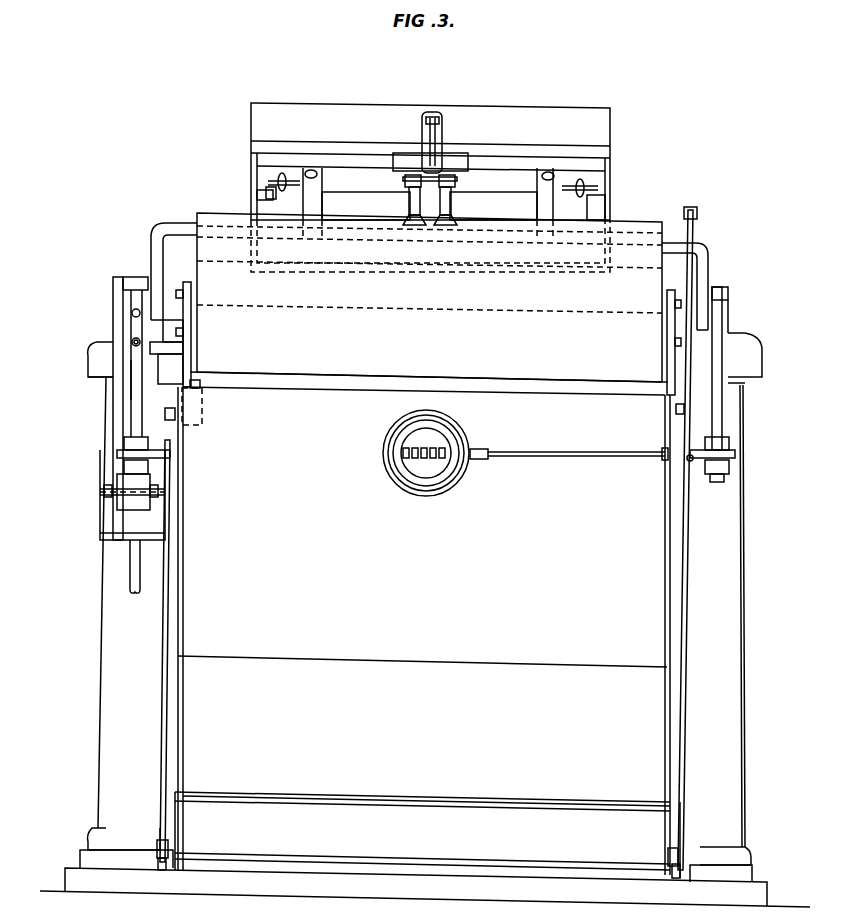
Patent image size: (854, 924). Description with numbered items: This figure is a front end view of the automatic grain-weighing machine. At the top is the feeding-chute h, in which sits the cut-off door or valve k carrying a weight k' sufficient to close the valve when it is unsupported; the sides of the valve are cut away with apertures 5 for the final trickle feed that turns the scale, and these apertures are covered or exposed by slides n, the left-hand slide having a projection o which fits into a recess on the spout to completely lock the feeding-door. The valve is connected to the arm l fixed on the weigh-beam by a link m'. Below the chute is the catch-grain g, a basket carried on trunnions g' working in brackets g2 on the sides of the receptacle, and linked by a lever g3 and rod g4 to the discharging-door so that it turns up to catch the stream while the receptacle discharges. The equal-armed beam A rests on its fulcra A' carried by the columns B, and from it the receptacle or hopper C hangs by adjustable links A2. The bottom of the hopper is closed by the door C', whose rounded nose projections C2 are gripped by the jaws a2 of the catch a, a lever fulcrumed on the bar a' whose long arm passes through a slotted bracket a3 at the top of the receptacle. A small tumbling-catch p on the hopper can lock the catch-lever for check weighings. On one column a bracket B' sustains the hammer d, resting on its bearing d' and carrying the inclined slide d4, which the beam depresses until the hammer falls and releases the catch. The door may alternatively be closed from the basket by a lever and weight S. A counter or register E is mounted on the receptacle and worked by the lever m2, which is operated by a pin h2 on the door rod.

The feeding-chute h is at (430, 187).
The cut-off door or valve k is at (428, 204).
The weight k' is at (429, 206).
The slides n is at (433, 194).
The apertures 5 is at (419, 205).
The projection o is at (266, 203).
The arm l is at (443, 133).
The link m' is at (415, 141).
The catch-grain g is at (429, 297).
The equal-armed beam A is at (433, 297).
The trunnions g' is at (428, 338).
The brackets g2 is at (192, 333).
The rod g4 is at (690, 222).
The lever g3 is at (698, 211).
The fulcra A' is at (430, 397).
The adjustable links A2 is at (130, 398).
The tumbling-catch p is at (170, 455).
The hammer d is at (423, 349).
The slide d4 is at (124, 380).
The bearing d' is at (121, 491).
The bracket B' is at (115, 521).
The columns B is at (416, 629).
The receptacle or hopper C is at (424, 631).
The door C' is at (425, 834).
The rounded nose projections C2 is at (170, 852).
The catch a is at (428, 651).
The bar a' is at (426, 787).
The jaws a2 is at (162, 870).
The bracket a3 is at (168, 420).
The lever and weight S is at (202, 402).
The counter or register E is at (458, 438).
The pin h2 is at (684, 408).
The lever m2 is at (690, 455).